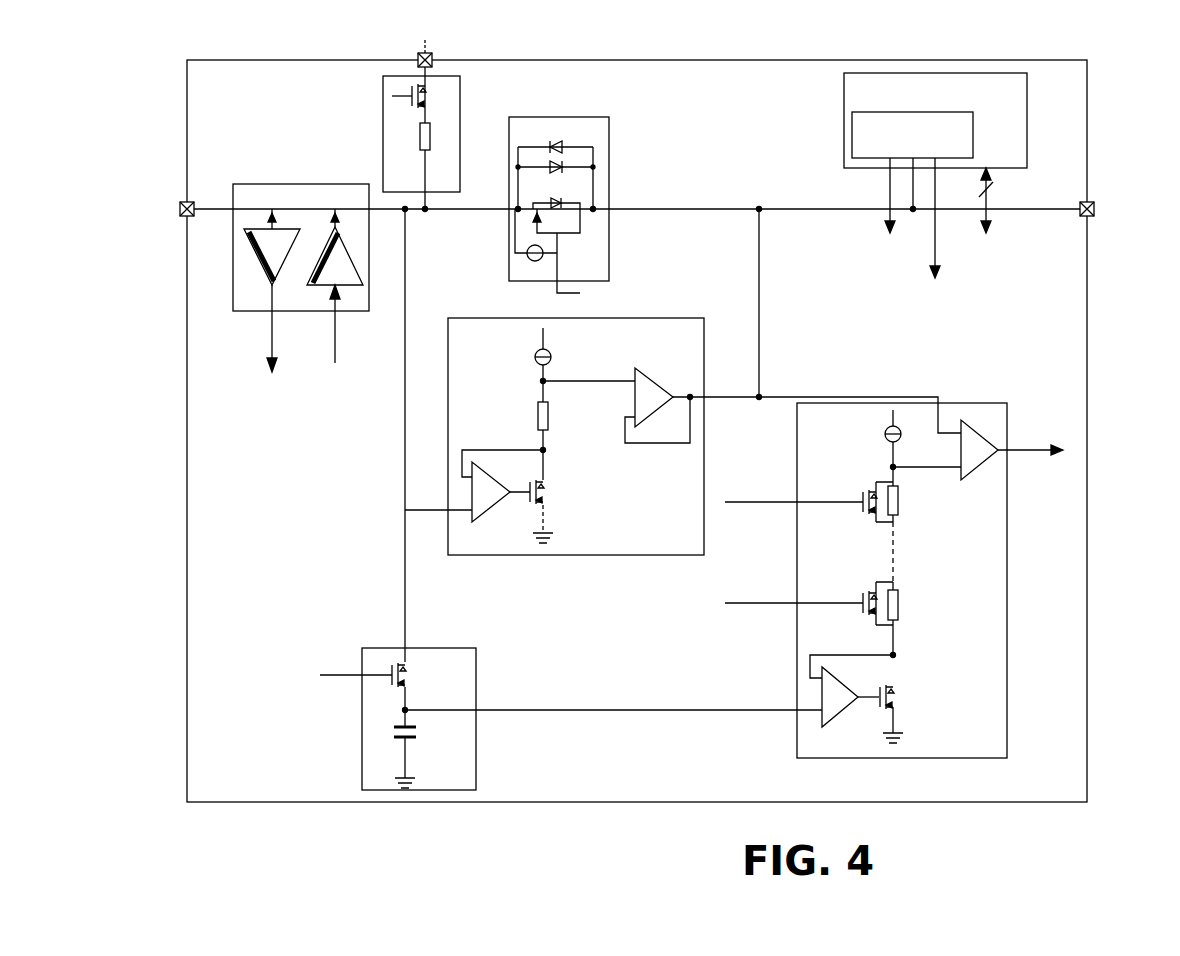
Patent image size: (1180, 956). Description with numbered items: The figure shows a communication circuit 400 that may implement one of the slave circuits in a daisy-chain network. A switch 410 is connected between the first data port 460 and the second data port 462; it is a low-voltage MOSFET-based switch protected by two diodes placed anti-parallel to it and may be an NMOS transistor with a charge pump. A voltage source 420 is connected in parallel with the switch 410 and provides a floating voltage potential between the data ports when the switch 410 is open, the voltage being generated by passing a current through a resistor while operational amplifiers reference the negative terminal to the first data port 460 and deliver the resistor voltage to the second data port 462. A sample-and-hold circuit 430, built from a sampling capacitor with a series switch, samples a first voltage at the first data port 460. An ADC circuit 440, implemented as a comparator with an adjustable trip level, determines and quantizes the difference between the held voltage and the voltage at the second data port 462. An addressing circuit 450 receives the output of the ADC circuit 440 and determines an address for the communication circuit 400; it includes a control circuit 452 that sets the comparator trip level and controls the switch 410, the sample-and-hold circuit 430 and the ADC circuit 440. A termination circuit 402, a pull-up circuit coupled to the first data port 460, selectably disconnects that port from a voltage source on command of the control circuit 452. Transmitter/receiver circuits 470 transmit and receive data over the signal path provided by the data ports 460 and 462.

The communication circuit 400 is at (1070, 60).
The termination circuit 402 is at (384, 77).
The switch 410 is at (528, 117).
The voltage source 420 is at (689, 318).
The sample-and-hold circuit 430 is at (456, 648).
The analog-to-digital converter (ADC) circuit 440 is at (976, 403).
The addressing circuit 450 is at (919, 169).
The control circuit 452 is at (852, 116).
The first data port 460 is at (181, 203).
The second data port 462 is at (1094, 216).
The transmitter/receiver circuits 470 is at (299, 184).